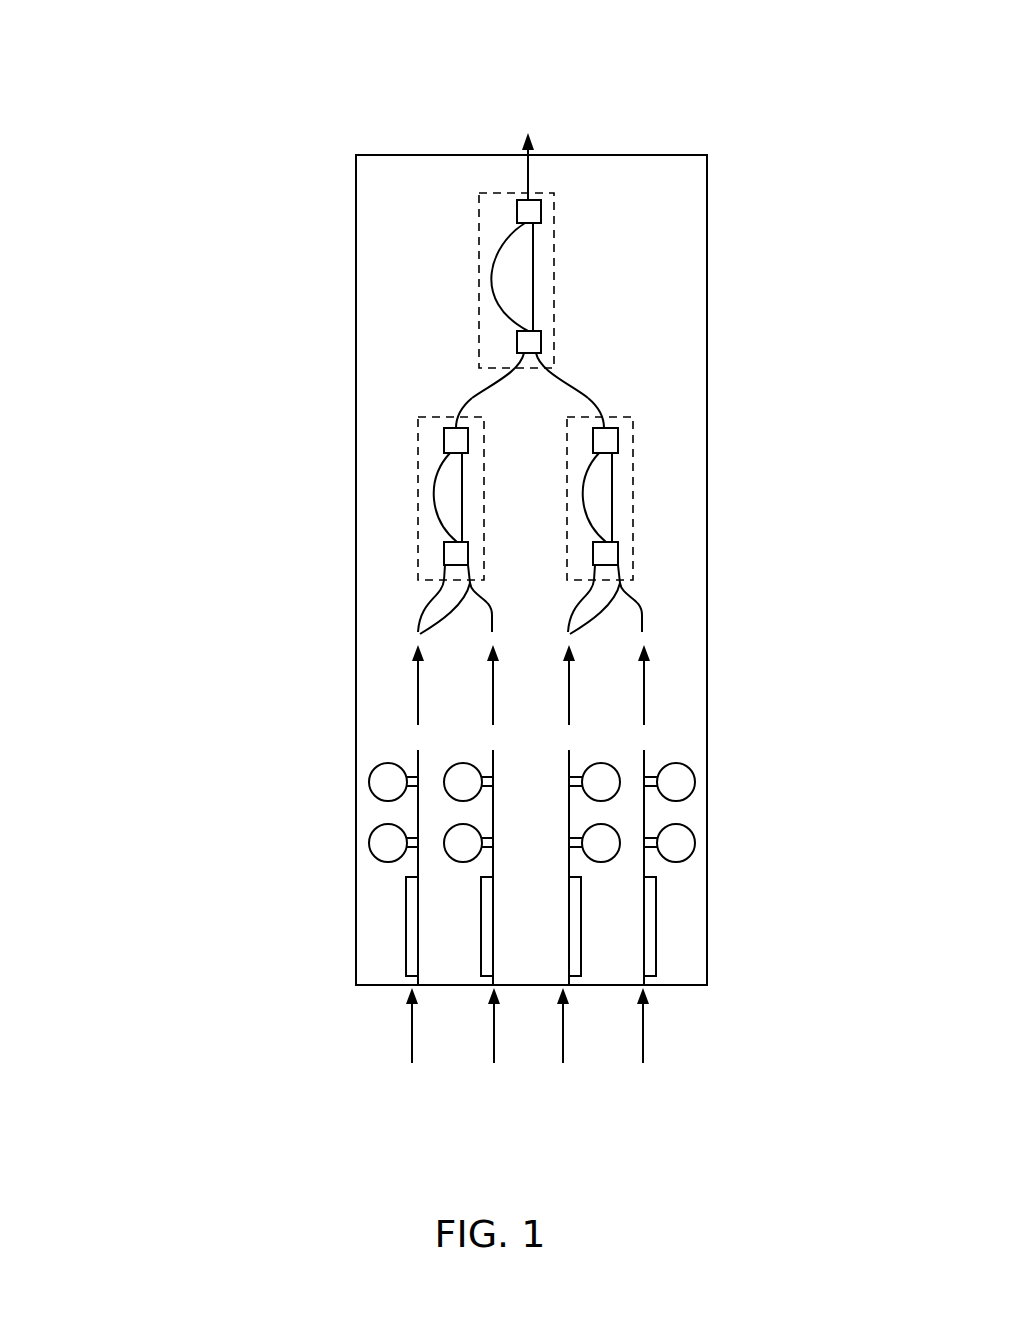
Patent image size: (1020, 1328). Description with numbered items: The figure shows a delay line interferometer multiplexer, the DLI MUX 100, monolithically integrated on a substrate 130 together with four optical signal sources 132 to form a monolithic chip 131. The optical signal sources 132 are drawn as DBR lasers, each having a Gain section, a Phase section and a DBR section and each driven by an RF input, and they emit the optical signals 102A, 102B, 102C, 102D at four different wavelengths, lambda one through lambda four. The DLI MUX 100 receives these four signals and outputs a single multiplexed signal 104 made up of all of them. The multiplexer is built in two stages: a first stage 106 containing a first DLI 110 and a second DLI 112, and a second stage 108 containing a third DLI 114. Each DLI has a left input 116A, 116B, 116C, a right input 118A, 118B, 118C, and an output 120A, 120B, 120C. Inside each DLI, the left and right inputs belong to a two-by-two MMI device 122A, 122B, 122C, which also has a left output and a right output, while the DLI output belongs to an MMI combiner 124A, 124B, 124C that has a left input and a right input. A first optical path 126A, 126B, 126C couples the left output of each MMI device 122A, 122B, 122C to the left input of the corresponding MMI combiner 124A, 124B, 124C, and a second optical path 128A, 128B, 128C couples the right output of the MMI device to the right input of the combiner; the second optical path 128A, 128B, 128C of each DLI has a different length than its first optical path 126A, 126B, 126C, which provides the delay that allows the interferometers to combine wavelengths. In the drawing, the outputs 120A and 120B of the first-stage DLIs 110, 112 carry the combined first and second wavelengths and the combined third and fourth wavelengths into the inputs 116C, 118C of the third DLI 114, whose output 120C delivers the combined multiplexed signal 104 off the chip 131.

The DLI MUX 100 is at (180, 380).
The optical signal 102A is at (418, 716).
The optical signal 102B is at (493, 672).
The optical signal 102C is at (569, 672).
The optical signal 102D is at (644, 716).
The multiplexed signal 104 is at (528, 165).
The first stage 106 is at (275, 628).
The second stage 108 is at (275, 360).
The first DLI 110 is at (418, 508).
The second DLI 112 is at (633, 523).
The third DLI 114 is at (479, 215).
The left input 116A is at (442, 588).
The left input 116B is at (647, 633).
The left input 116C is at (517, 370).
The right input 118A is at (422, 626).
The right input 118B is at (630, 588).
The right input 118C is at (548, 382).
The output 120A is at (452, 420).
The output 120B is at (603, 415).
The output 120C is at (528, 188).
The 2×2 MMI device 122A is at (444, 553).
The 2×2 MMI device 122B is at (618, 553).
The 2×2 MMI device 122C is at (542, 343).
The MMI combiner 124A is at (444, 443).
The MMI combiner 124B is at (618, 443).
The MMI combiner 124C is at (541, 212).
The first optical path 126A is at (437, 480).
The first optical path 126B is at (588, 476).
The first optical path 126C is at (497, 297).
The second optical path 128A is at (462, 517).
The second optical path 128B is at (613, 487).
The second optical path 128C is at (533, 267).
The substrate 130 is at (400, 156).
The monolithic chip 131 is at (399, 62).
The optical signal sources 132 is at (732, 970).